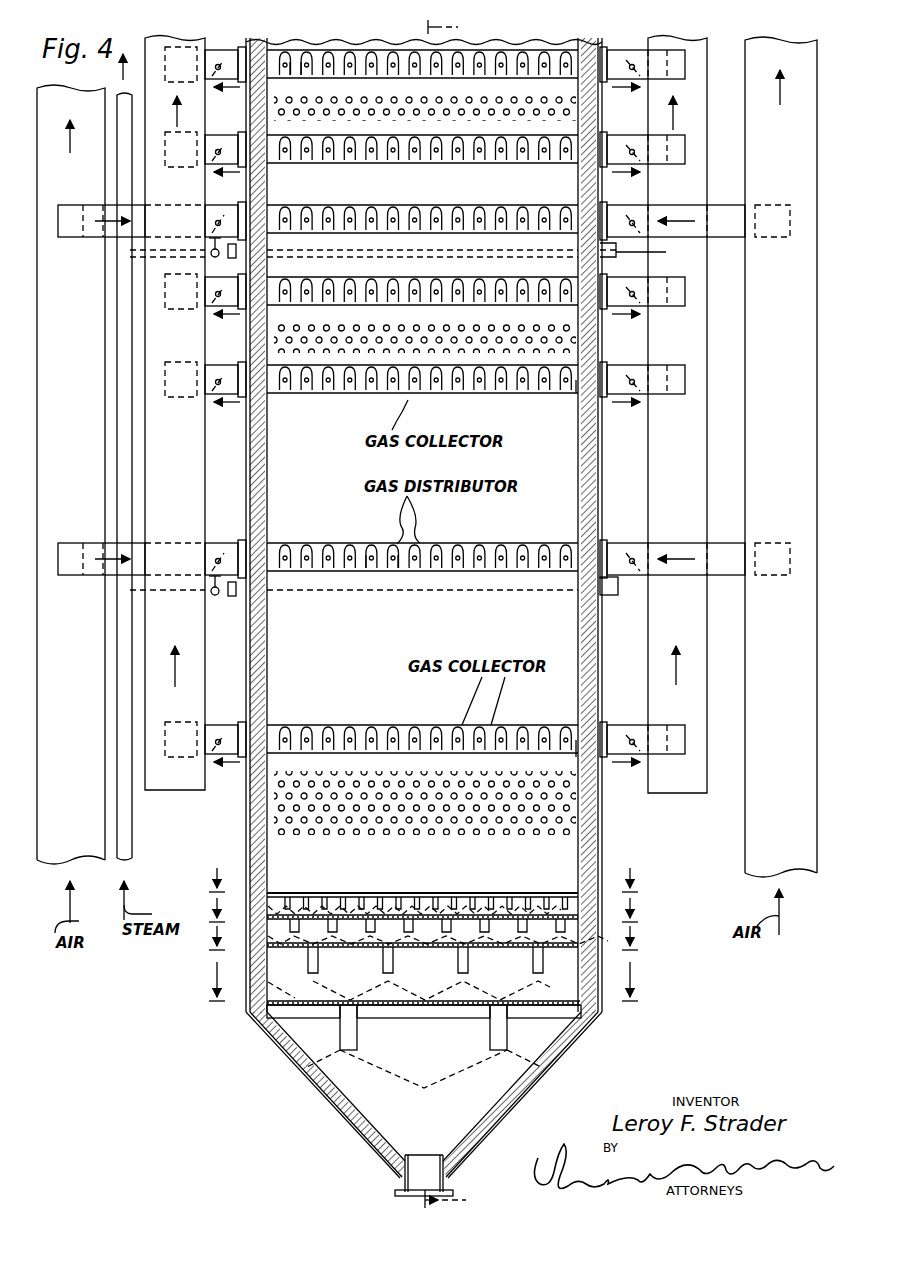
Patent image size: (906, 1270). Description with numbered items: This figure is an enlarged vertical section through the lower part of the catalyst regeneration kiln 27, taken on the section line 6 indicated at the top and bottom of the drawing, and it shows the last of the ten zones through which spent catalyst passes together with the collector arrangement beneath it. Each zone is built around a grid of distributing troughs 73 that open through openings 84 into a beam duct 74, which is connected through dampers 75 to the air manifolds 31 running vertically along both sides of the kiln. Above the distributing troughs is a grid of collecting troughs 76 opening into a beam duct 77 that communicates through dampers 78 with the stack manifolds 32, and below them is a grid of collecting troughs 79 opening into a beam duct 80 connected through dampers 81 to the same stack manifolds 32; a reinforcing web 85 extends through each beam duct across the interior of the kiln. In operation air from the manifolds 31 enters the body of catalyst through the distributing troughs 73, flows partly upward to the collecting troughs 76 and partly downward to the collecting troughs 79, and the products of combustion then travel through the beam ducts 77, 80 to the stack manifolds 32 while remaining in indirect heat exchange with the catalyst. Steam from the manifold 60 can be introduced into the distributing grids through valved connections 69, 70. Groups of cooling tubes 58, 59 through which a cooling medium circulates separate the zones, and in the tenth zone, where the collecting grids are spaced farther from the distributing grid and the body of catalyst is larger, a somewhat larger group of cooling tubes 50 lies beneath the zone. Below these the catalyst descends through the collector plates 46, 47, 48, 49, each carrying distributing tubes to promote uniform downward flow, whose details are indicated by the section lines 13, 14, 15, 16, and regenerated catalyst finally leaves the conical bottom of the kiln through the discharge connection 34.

The section line 6- 6 is at (454, 614).
The section line 13- 13 is at (426, 880).
The section line 14- 14 is at (426, 909).
The section line 15- 15 is at (426, 938).
The section line 16- 16 is at (424, 981).
The kiln 27 is at (296, 1062).
The air manifolds 31 is at (88, 888).
The stack manifolds 32 is at (168, 790).
The discharge connection 34 is at (404, 1186).
The collector plate 46 is at (310, 893).
The collector plate 47 is at (439, 915).
The collector plate 48 is at (325, 954).
The collector plate 49 is at (396, 1005).
The cooling tubes 50 is at (578, 808).
The cooling tubes 58 is at (576, 107).
The cooling tubes 59 is at (574, 335).
The steam manifold 60 is at (132, 846).
The valved connection 69 is at (647, 252).
The valved connection 70 is at (239, 596).
The distributing troughs 73 is at (288, 210).
The beam duct 74 is at (498, 206).
The dampers 75 is at (220, 221).
The collecting troughs 76 is at (292, 143).
The beam duct 77 is at (360, 163).
The dampers 78 is at (220, 148).
The collecting troughs 79 is at (344, 52).
The beam duct 80 is at (454, 280).
The dampers 81 is at (223, 62).
The openings 84 is at (302, 60).
The reinforcing web 85 is at (574, 52).